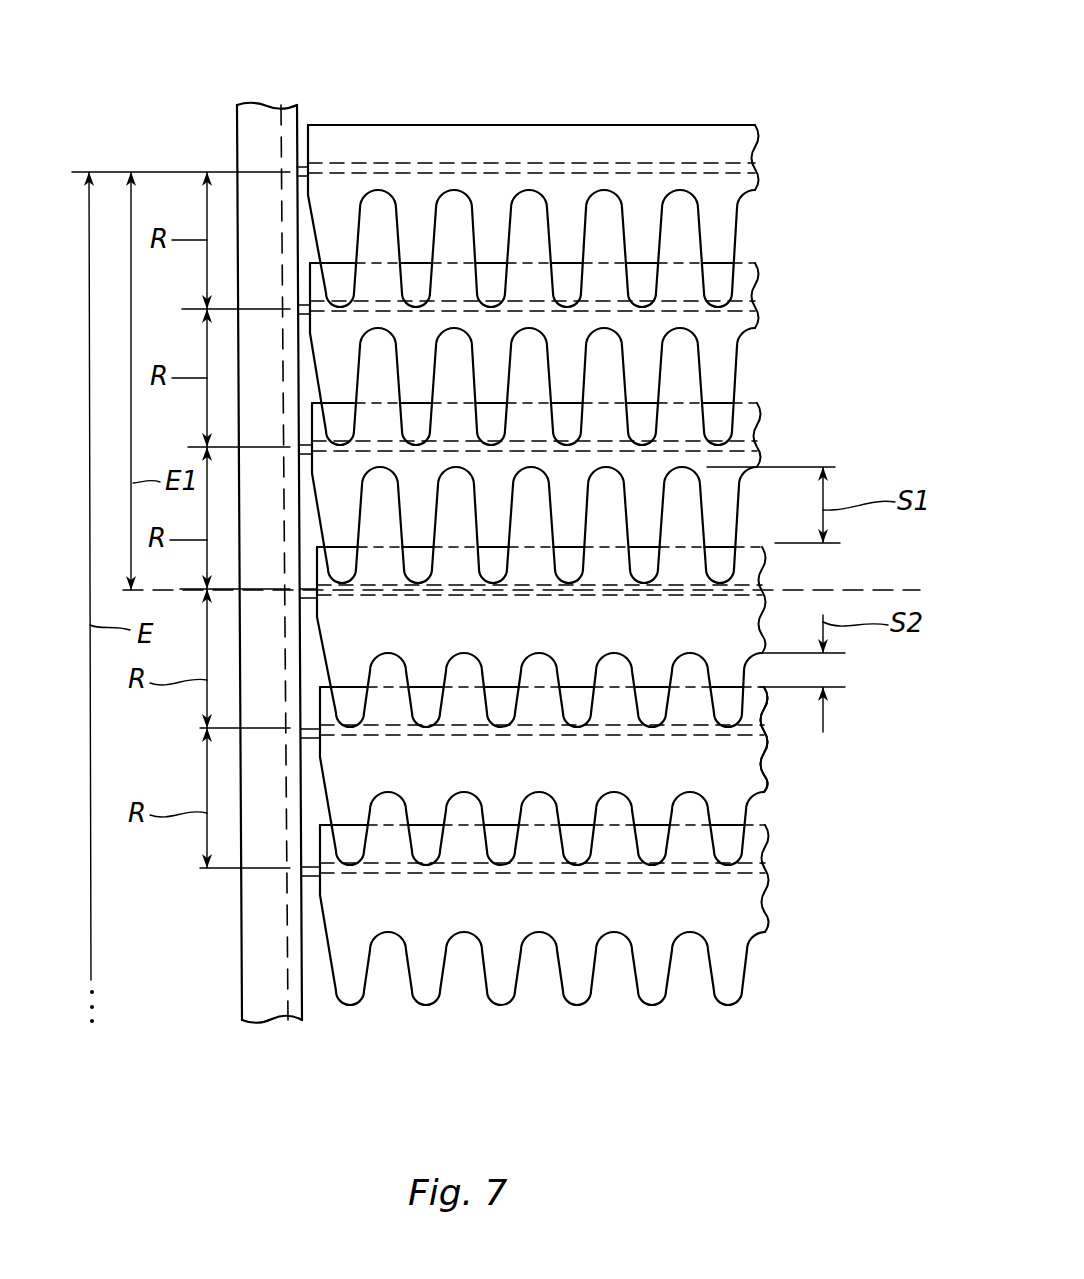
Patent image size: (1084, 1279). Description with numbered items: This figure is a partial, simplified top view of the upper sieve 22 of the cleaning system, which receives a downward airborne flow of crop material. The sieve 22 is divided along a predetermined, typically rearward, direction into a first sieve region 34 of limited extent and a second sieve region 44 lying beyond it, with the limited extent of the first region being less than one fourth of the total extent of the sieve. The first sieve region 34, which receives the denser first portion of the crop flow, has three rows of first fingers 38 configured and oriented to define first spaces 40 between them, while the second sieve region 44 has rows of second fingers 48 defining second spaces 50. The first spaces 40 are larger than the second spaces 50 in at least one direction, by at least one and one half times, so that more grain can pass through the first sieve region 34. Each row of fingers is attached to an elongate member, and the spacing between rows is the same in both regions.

The upper sieve 22 is at (591, 539).
The first fingers 38 is at (720, 243).
The first spaces 40 is at (685, 374).
The first sieve region 34 is at (820, 420).
The second sieve region 44 is at (632, 794).
The second spaces 50 is at (695, 853).
The second fingers 48 is at (580, 1008).